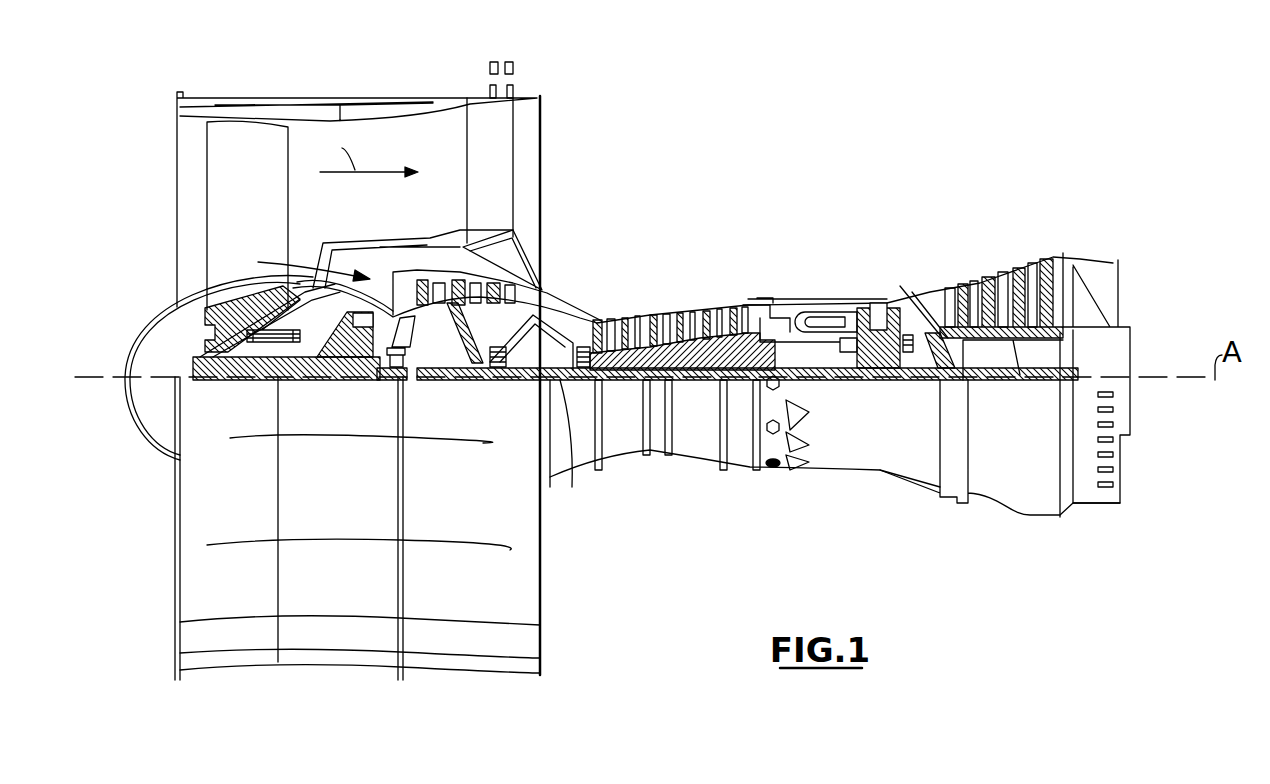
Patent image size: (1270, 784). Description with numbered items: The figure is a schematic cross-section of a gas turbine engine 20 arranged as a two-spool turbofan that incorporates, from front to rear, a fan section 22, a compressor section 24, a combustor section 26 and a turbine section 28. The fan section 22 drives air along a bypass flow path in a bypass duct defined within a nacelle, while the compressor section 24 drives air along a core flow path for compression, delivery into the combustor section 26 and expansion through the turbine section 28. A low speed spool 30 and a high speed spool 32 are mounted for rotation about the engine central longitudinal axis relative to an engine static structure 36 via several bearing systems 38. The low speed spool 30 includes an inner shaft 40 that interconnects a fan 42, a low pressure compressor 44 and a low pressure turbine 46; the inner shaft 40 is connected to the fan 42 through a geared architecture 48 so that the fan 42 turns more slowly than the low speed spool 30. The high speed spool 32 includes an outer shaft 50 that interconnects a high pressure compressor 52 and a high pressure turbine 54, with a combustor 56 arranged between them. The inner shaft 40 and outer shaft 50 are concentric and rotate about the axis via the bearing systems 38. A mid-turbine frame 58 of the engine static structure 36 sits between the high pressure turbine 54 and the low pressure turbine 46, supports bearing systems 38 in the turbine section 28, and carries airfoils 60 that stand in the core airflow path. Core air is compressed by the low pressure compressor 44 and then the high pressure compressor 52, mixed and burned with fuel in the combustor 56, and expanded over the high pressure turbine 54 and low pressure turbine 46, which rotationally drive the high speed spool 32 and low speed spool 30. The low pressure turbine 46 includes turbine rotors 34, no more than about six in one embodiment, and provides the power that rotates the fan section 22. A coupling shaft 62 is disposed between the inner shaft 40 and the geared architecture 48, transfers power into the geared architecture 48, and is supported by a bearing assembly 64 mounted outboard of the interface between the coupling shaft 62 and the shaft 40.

The gas turbine engine 20 is at (815, 150).
The fan section 22 is at (163, 72).
The compressor section 24 is at (397, 214).
The combustor section 26 is at (905, 214).
The turbine section 28 is at (1075, 214).
The low speed spool 30 is at (697, 380).
The high speed spool 32 is at (740, 340).
The turbine rotors 34 is at (1017, 360).
The engine static structure 36 is at (740, 465).
The bearing systems 38 is at (257, 358).
The inner shaft 40 is at (568, 480).
The fan 42 is at (233, 228).
The low pressure compressor 44 is at (477, 280).
The low pressure turbine 46 is at (1007, 270).
The geared architecture 48 is at (357, 357).
The outer shaft 50 is at (825, 380).
The high pressure compressor 52 is at (670, 335).
The high pressure turbine 54 is at (880, 303).
The combustor 56 is at (813, 323).
The mid-turbine frame 58 is at (921, 292).
The airfoils 60 is at (950, 360).
The coupling shaft 62 is at (390, 380).
The bearing assembly 64 is at (403, 360).